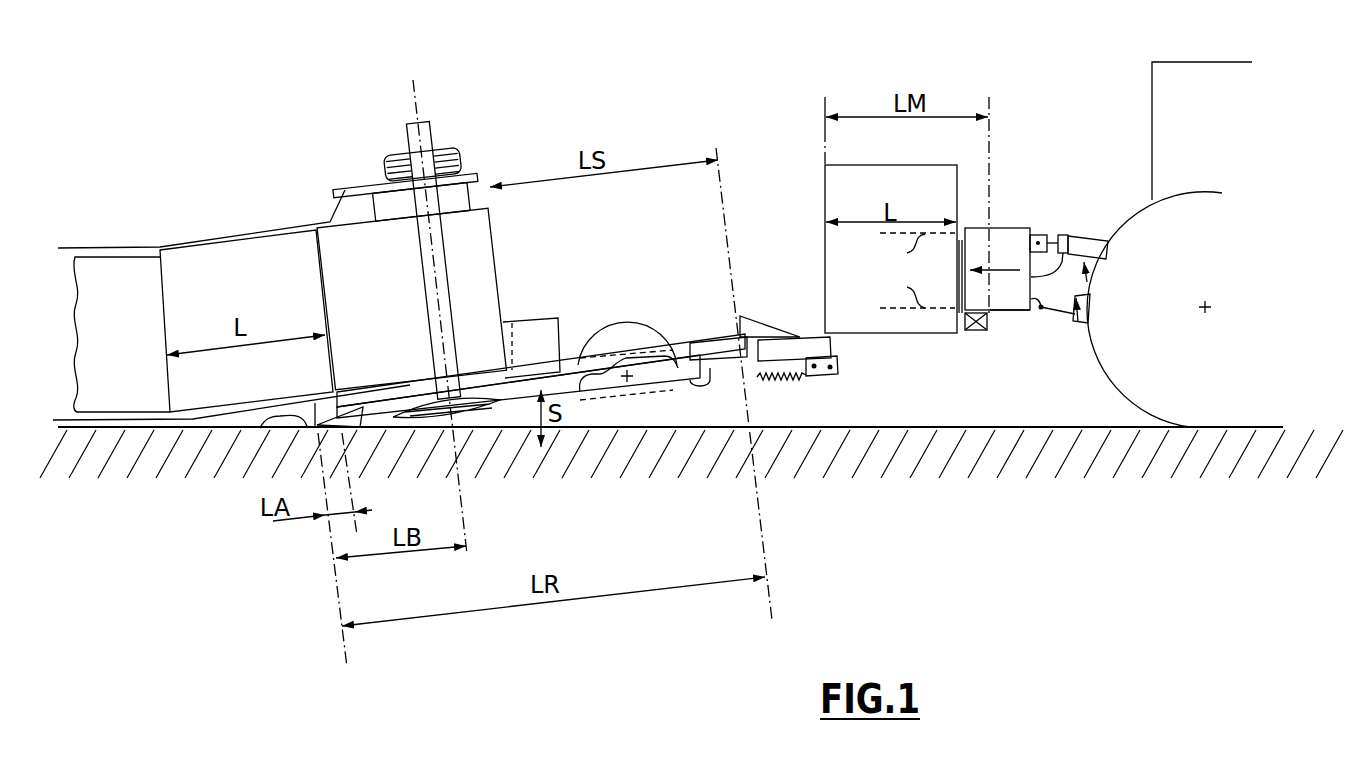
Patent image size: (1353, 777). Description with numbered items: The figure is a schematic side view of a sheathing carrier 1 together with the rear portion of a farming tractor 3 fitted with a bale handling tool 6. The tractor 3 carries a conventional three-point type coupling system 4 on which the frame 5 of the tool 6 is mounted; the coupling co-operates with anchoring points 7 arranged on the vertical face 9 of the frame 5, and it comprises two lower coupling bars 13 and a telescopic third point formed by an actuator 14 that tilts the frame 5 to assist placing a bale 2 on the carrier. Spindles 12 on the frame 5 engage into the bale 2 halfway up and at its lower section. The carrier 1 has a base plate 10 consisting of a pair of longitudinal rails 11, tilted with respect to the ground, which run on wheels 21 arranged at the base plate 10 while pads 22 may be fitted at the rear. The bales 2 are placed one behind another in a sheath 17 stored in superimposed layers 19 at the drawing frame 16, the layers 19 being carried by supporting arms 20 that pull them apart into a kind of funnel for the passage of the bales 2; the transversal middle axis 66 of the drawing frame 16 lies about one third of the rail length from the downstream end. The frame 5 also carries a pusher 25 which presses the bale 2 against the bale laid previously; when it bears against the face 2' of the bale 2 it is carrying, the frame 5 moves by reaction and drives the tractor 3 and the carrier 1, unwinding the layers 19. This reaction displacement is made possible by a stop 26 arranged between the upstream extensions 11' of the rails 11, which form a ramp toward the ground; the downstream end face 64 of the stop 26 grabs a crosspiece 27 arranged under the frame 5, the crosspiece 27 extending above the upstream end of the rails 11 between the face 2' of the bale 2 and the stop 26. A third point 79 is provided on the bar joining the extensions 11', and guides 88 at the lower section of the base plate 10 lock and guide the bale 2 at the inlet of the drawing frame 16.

The carrier 1 is at (683, 408).
The bale 2 is at (518, 288).
The face of the bale 2' is at (637, 257).
The tractor 3 is at (1168, 70).
The three-point type coupling system 4 is at (1090, 295).
The frame 5 is at (1012, 312).
The tool 6 is at (1000, 212).
The anchoring points 7 is at (1040, 235).
The vertical face 9 is at (1063, 235).
The base plate 10 is at (618, 345).
The rails 11 is at (714, 321).
The extensions 11' is at (794, 325).
The spindles 12 is at (917, 270).
The lower coupling bars 13 is at (1082, 325).
The actuator 14 is at (1092, 237).
The drawing frame 16 is at (481, 131).
The sheath 17 is at (303, 216).
The layers 19 is at (397, 154).
The supporting arms 20 is at (347, 190).
The wheels 21 is at (581, 388).
The pads 22 is at (265, 430).
The pusher 25 is at (968, 250).
The stop 26 is at (753, 314).
The crosspiece 27 is at (979, 332).
The downstream end face 64 is at (737, 340).
The transversal middle axis 66 is at (414, 92).
The third point 79 is at (838, 372).
The guides 88 is at (540, 320).